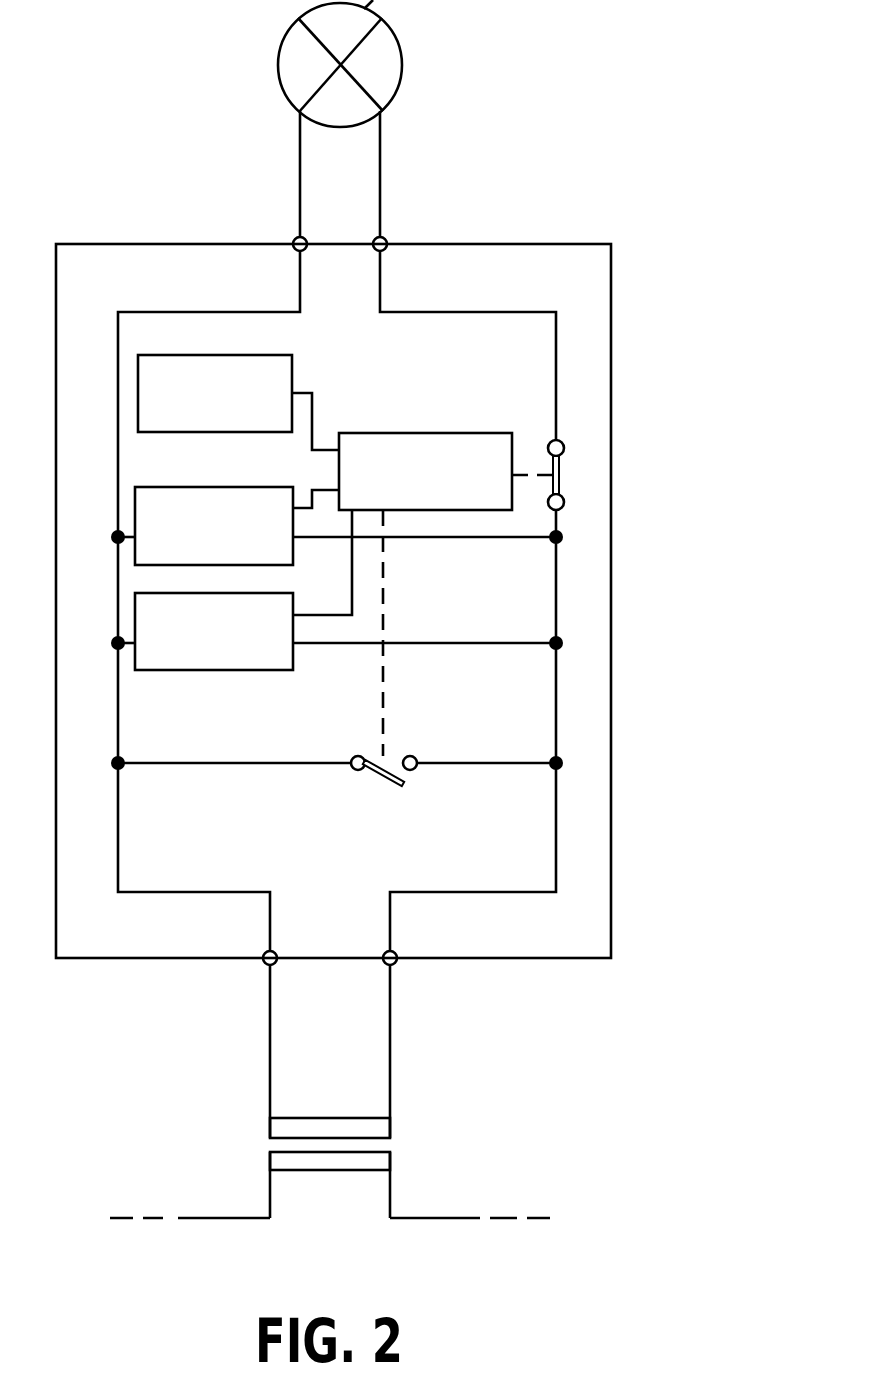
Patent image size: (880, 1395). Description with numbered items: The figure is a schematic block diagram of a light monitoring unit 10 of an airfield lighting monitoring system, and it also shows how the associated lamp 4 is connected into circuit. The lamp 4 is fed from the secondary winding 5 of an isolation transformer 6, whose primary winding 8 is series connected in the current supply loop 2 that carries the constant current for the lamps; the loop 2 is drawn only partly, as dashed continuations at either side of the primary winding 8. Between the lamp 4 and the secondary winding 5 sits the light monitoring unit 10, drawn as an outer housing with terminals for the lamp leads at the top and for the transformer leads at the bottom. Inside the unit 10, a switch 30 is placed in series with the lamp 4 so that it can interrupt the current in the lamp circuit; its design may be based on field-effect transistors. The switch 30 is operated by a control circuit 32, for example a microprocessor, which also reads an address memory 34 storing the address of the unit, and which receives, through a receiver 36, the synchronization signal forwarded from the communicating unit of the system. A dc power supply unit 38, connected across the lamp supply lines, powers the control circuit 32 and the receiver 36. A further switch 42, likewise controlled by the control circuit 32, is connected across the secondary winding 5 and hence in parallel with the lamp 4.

The current supply loop 2 is at (436, 1218).
The lamp 4 is at (415, 0).
The secondary winding 5 is at (315, 1118).
The isolation transformer 6 is at (412, 1147).
The primary winding 8 is at (312, 1170).
The light monitoring unit 10 is at (611, 300).
The switch 30 is at (559, 478).
The control circuit 32 is at (397, 432).
The address memory 34 is at (292, 358).
The receiver 36 is at (135, 608).
The dc power supply unit 38 is at (135, 497).
The switch 42 is at (380, 780).